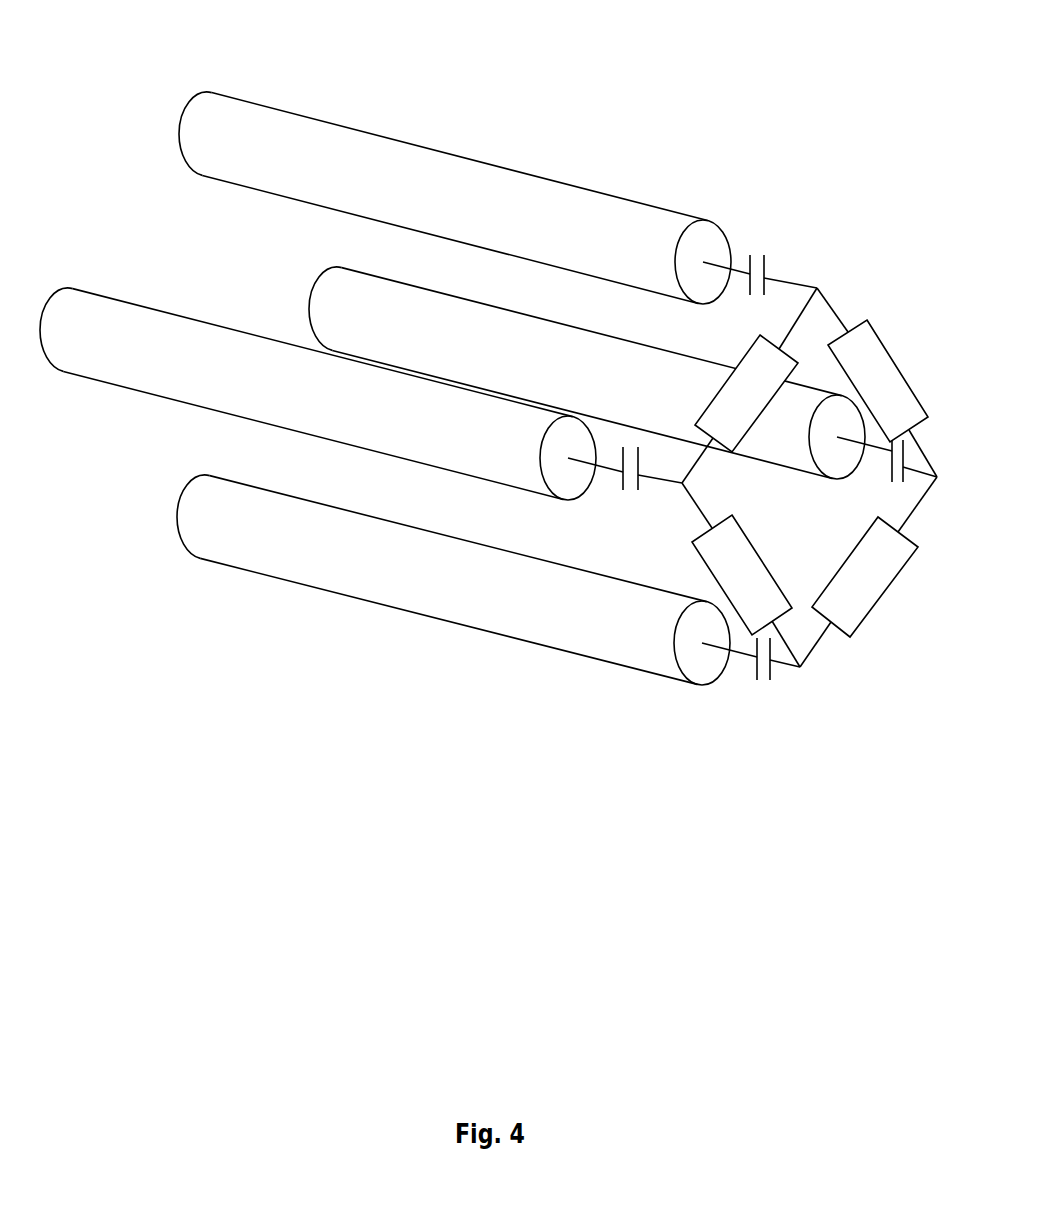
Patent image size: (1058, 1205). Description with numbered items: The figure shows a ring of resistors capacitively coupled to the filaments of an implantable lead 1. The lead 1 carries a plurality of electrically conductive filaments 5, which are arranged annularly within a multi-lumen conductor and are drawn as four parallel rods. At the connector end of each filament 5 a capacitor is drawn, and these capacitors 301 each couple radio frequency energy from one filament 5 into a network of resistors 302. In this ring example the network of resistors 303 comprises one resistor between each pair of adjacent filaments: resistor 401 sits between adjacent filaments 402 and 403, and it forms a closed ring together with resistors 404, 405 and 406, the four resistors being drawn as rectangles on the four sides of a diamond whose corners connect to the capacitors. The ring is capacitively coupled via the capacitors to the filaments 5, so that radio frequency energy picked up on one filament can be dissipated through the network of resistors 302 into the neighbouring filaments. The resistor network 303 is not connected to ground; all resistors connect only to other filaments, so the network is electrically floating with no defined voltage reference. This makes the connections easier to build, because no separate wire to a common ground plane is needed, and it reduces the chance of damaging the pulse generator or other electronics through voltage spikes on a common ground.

The lead 1 is at (507, 80).
The electrically conductive filaments 5 is at (313, 137).
The capacitors 301 is at (860, 165).
The network of resistors 302 is at (782, 245).
The resistor network 303 is at (923, 324).
The resistor 401 is at (849, 592).
The filament 402 is at (505, 366).
The filament 403 is at (433, 586).
The resistor 404 is at (862, 386).
The resistor 405 is at (725, 404).
The resistor 406 is at (720, 582).